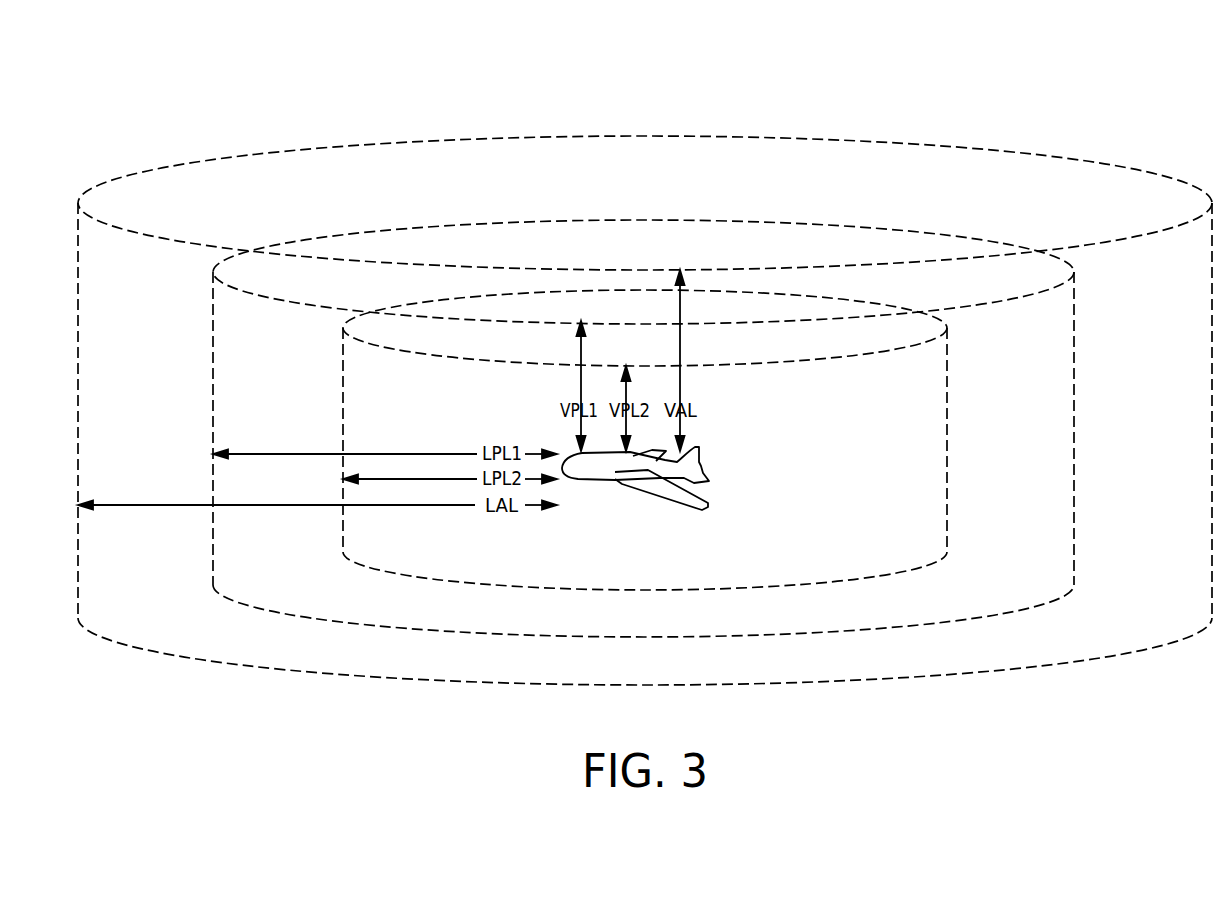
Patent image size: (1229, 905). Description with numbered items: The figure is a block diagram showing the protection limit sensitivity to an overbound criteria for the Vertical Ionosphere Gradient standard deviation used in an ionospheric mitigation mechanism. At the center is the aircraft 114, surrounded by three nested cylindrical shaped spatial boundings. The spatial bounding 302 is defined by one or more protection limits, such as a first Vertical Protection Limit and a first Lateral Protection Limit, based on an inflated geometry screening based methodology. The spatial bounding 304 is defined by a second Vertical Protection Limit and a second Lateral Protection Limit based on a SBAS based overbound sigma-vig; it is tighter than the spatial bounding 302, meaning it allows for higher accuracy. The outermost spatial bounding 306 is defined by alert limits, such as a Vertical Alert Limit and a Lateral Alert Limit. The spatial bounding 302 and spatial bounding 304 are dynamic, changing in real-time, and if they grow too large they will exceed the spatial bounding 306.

The aircraft 114 is at (640, 490).
The spatial bounding 302 is at (820, 223).
The spatial bounding 304 is at (813, 361).
The spatial bounding 306 is at (897, 140).